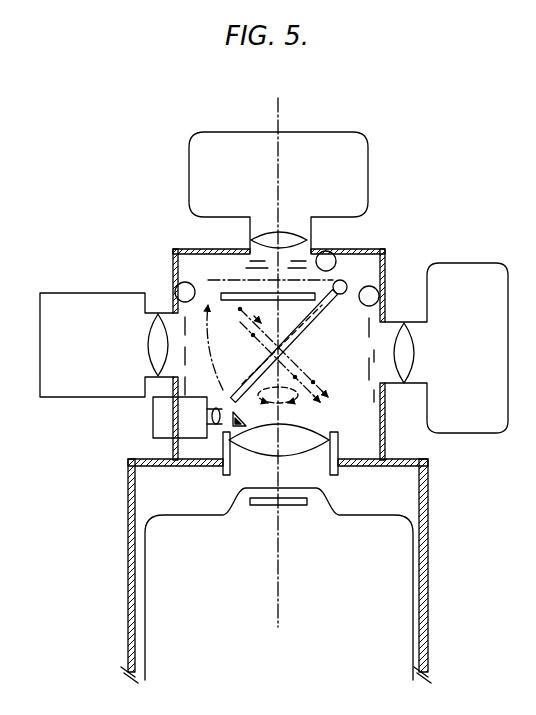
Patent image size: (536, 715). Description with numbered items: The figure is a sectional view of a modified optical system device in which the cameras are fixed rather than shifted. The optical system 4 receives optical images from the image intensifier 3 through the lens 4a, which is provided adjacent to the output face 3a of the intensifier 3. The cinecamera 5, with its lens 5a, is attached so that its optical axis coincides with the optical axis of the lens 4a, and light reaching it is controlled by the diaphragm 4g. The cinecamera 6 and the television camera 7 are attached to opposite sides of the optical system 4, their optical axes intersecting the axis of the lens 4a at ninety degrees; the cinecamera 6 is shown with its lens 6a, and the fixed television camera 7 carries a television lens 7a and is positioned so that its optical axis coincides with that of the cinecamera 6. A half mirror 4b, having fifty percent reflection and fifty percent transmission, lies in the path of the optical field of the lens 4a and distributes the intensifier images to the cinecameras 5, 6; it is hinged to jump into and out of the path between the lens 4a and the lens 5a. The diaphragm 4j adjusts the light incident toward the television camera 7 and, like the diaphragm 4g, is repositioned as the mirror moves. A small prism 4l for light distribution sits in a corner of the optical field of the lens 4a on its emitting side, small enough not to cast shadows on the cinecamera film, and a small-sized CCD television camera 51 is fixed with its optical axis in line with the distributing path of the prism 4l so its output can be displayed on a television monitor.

The image intensifier 3 is at (428, 590).
The output face 3a is at (293, 507).
The optical system 4 is at (360, 250).
The lens 4a is at (240, 309).
The half mirror 4b is at (333, 300).
The diaphragm 4g is at (241, 266).
The diaphragm 4j is at (198, 360).
The small prism 4l is at (244, 426).
The cinecamera 5 is at (352, 147).
The lens 5a is at (292, 226).
The cinecamera 6 is at (472, 268).
The detector lens 6a is at (412, 354).
The television camera 7 is at (55, 298).
The television lens 7a is at (144, 348).
The small-sized television camera 51 is at (162, 420).